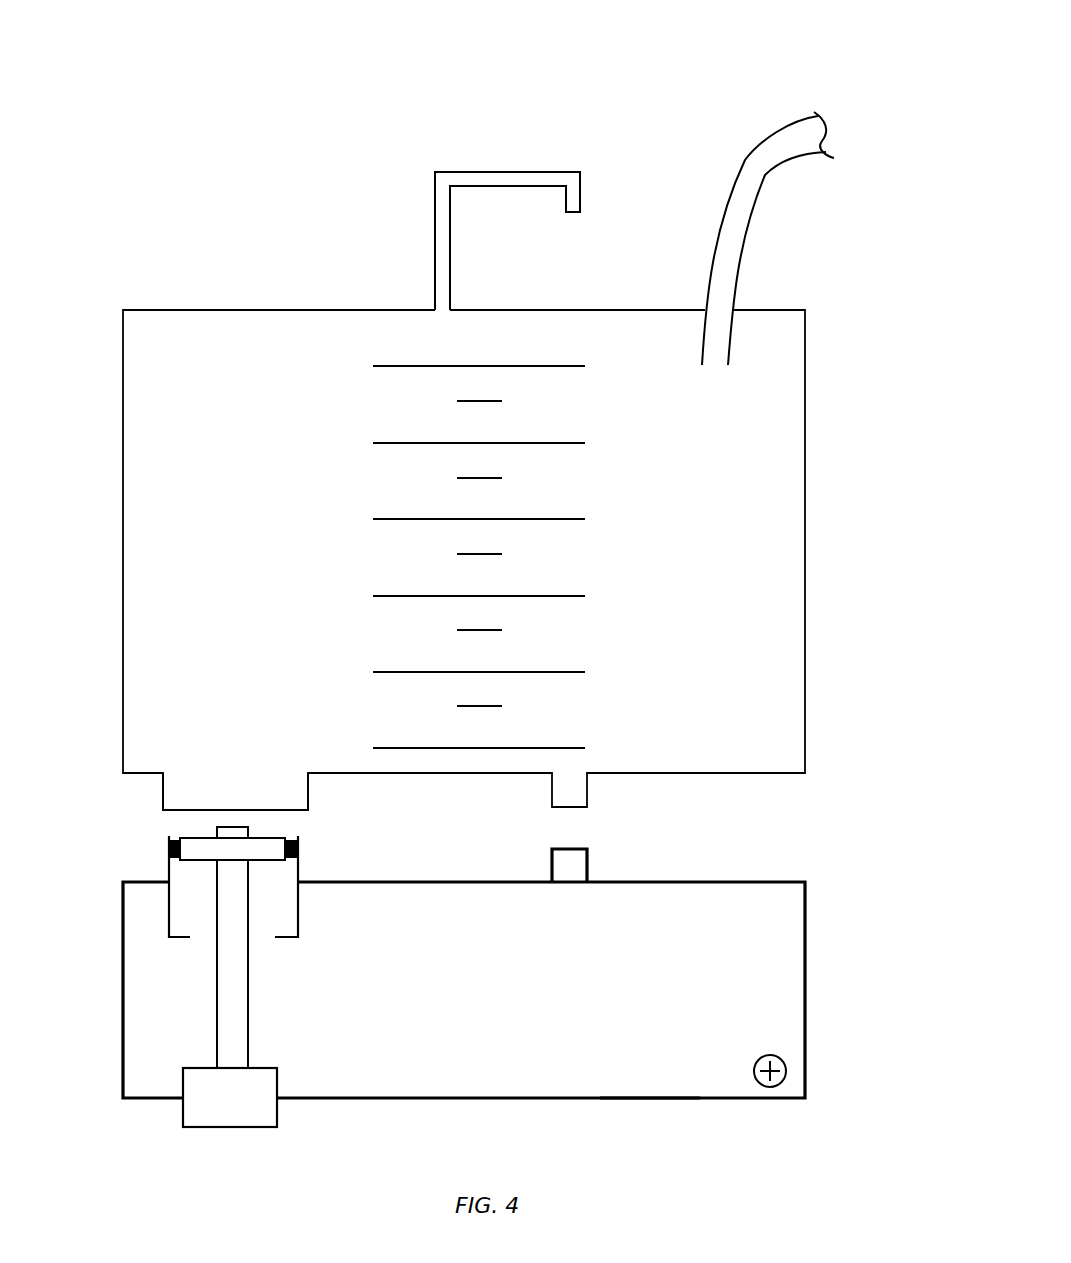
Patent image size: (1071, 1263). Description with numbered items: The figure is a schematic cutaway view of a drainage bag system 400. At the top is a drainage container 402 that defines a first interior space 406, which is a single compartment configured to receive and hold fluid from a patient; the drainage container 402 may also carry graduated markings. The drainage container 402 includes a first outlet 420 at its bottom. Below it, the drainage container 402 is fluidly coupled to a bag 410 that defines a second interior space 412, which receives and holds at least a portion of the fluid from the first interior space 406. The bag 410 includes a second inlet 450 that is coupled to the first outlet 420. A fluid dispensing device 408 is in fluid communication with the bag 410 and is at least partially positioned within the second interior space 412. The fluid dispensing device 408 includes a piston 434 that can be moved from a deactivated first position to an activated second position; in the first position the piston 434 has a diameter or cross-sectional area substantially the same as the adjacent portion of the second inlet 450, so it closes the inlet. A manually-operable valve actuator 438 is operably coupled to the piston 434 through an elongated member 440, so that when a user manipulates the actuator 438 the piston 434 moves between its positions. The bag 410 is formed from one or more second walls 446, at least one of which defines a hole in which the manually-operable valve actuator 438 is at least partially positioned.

The drainage bag system 400 is at (714, 71).
The drainage container 402 is at (806, 378).
The first interior space 406 is at (209, 389).
The fluid dispensing device 408 is at (216, 980).
The bag 410 is at (807, 921).
The second interior space 412 is at (766, 985).
The first outlet 420 is at (162, 793).
The piston 434 is at (191, 862).
The manually-operable valve actuator 438 is at (183, 1118).
The elongated member 440 is at (217, 1028).
The second walls 446 is at (635, 1099).
The second inlet 450 is at (164, 849).